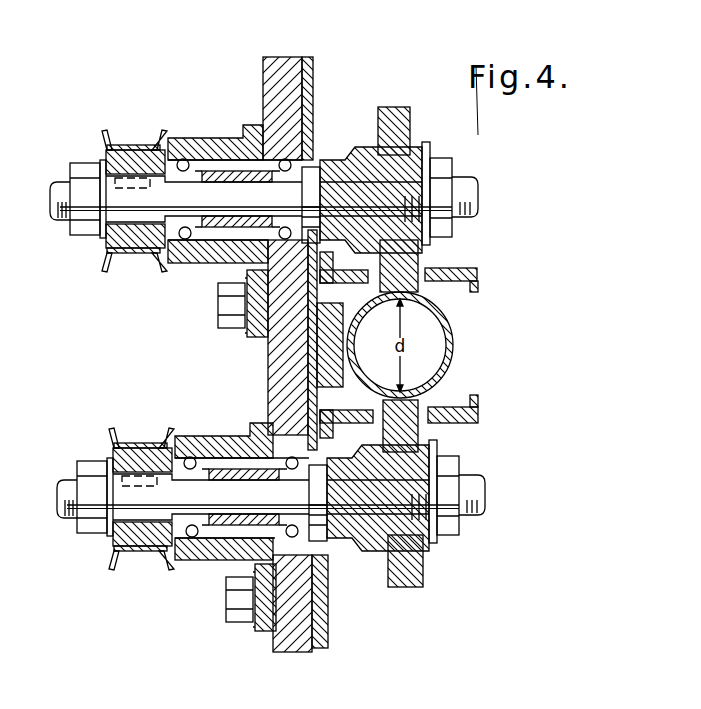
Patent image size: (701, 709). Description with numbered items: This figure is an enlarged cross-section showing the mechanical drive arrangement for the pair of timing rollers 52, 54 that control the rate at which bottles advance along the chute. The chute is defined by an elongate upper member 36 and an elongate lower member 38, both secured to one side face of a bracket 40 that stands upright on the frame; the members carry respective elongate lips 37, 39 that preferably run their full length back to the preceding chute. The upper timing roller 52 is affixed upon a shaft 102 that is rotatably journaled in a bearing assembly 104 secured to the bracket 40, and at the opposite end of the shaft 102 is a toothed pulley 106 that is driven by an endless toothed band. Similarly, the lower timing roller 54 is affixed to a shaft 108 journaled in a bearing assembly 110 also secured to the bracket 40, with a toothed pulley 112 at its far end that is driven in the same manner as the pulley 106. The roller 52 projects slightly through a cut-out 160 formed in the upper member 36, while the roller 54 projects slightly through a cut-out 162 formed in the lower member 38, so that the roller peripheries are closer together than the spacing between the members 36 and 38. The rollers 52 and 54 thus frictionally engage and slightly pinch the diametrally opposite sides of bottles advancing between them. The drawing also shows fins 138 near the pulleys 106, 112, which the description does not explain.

The elongate upper member 36 is at (470, 268).
The elongate lip 37 is at (478, 286).
The elongate lower member 38 is at (463, 424).
The elongate lip 39 is at (480, 402).
The bracket 40 is at (283, 57).
The timing roller 52 is at (393, 107).
The timing roller 54 is at (425, 575).
The shaft 102 is at (342, 183).
The bearing assembly 104 is at (203, 138).
The toothed pulley 106 is at (132, 147).
The shaft 108 is at (360, 503).
The bearing assembly 110 is at (207, 433).
The toothed pulley 112 is at (148, 443).
The fins 138 is at (138, 258).
The cut-out 160 is at (420, 282).
The cut-out 162 is at (422, 410).